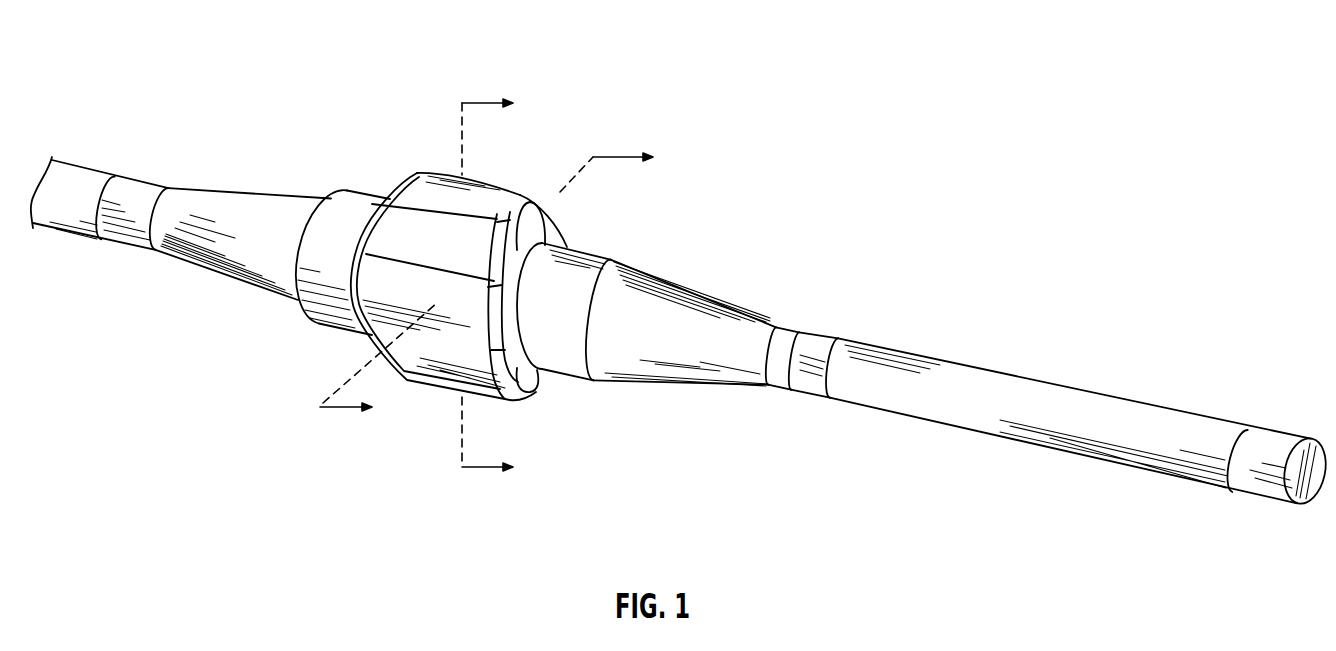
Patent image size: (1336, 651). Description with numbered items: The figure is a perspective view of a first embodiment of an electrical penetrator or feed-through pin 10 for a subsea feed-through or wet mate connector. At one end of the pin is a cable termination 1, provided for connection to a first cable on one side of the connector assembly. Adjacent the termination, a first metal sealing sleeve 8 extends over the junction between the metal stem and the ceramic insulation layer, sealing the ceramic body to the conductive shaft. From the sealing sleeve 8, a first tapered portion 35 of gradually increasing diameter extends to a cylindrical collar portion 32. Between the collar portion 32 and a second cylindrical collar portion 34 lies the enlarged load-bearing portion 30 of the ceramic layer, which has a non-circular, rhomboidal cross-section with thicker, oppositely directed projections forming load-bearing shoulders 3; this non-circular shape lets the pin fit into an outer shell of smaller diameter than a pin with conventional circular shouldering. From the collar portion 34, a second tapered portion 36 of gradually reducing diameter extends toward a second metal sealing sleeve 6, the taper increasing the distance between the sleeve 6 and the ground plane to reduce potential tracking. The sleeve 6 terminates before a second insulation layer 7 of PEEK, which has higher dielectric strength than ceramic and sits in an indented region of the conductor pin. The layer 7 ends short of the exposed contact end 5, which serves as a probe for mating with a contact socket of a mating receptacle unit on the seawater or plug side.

The electrical penetrator or feed-through pin 10 is at (681, 261).
The cable termination 1 is at (93, 168).
The first metal sealing sleeve 8 is at (141, 239).
The first tapered portion 35 is at (250, 192).
The cylindrical collar portion 32 is at (351, 195).
The enlarged load-bearing portion 30 is at (430, 213).
The load-bearing shoulders 3 is at (535, 221).
The cylindrical collar portion 34 is at (603, 261).
The second tapered portion 36 is at (765, 314).
The second metal sealing sleeve 6 is at (829, 330).
The second insulation layer 7 is at (1166, 413).
The exposed contact end 5 is at (1262, 440).